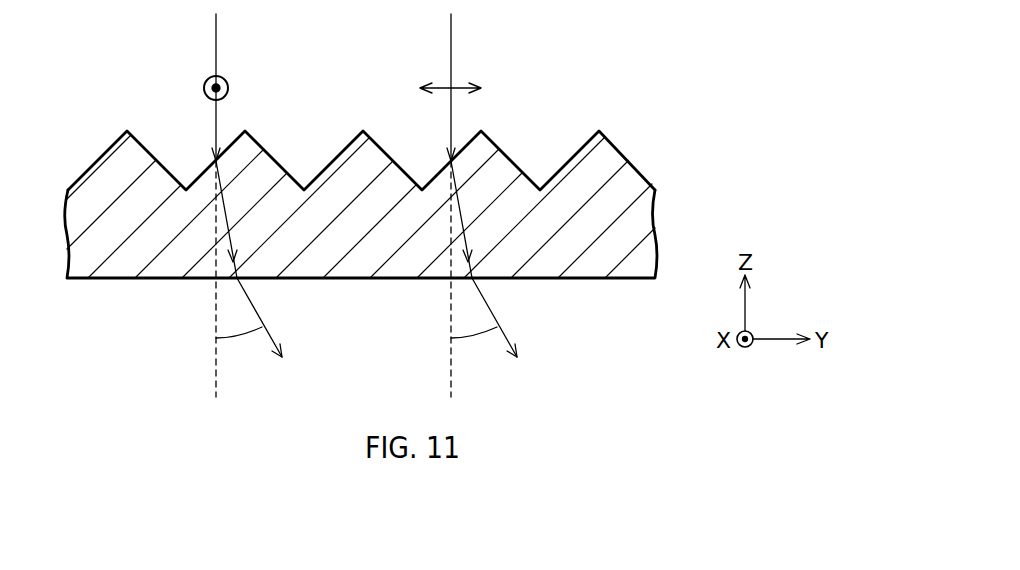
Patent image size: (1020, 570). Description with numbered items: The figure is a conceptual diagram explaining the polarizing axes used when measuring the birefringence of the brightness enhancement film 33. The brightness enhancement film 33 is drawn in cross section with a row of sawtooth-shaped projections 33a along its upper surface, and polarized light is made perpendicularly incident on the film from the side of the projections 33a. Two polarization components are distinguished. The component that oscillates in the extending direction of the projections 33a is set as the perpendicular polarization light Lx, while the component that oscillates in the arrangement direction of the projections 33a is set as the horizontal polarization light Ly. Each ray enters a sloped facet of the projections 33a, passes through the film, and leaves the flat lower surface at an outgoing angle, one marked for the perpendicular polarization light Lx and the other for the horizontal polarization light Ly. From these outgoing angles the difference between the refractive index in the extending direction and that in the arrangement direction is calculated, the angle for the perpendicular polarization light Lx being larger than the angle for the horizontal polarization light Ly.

The brightness enhancement film 33 is at (664, 54).
The projections 33a is at (618, 152).
The perpendicular polarization light Lx is at (218, 42).
The horizontal polarization light Ly is at (453, 42).